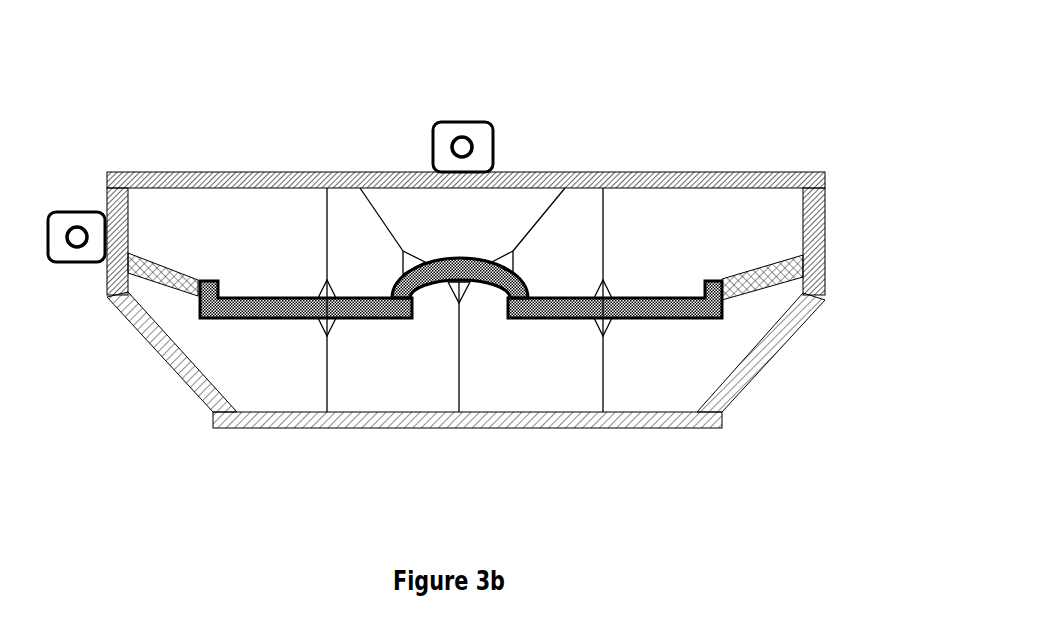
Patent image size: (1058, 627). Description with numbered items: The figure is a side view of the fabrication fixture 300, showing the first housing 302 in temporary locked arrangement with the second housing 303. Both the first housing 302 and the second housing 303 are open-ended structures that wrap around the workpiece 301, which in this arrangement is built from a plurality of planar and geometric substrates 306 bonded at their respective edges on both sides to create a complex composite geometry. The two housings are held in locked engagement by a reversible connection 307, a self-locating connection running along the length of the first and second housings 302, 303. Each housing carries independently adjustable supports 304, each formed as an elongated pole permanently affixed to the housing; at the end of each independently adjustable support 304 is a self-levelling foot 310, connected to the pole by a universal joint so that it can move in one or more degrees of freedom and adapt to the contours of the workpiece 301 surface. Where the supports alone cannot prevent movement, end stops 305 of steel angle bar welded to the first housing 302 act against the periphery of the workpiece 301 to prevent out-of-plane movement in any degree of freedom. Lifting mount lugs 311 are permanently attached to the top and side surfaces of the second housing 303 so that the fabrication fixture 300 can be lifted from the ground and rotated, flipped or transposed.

The fabrication fixture 300 is at (440, 503).
The workpiece 301 is at (558, 320).
The first housing 302 is at (645, 174).
The second housing 303 is at (585, 428).
The independently adjustable support 304 is at (603, 232).
The end stop 305 is at (733, 296).
The planar and geometric substrates 306 is at (232, 298).
The reversible connection 307 is at (822, 296).
The self-levelling foot 310 is at (604, 333).
The lifting mount lug 311 is at (456, 122).